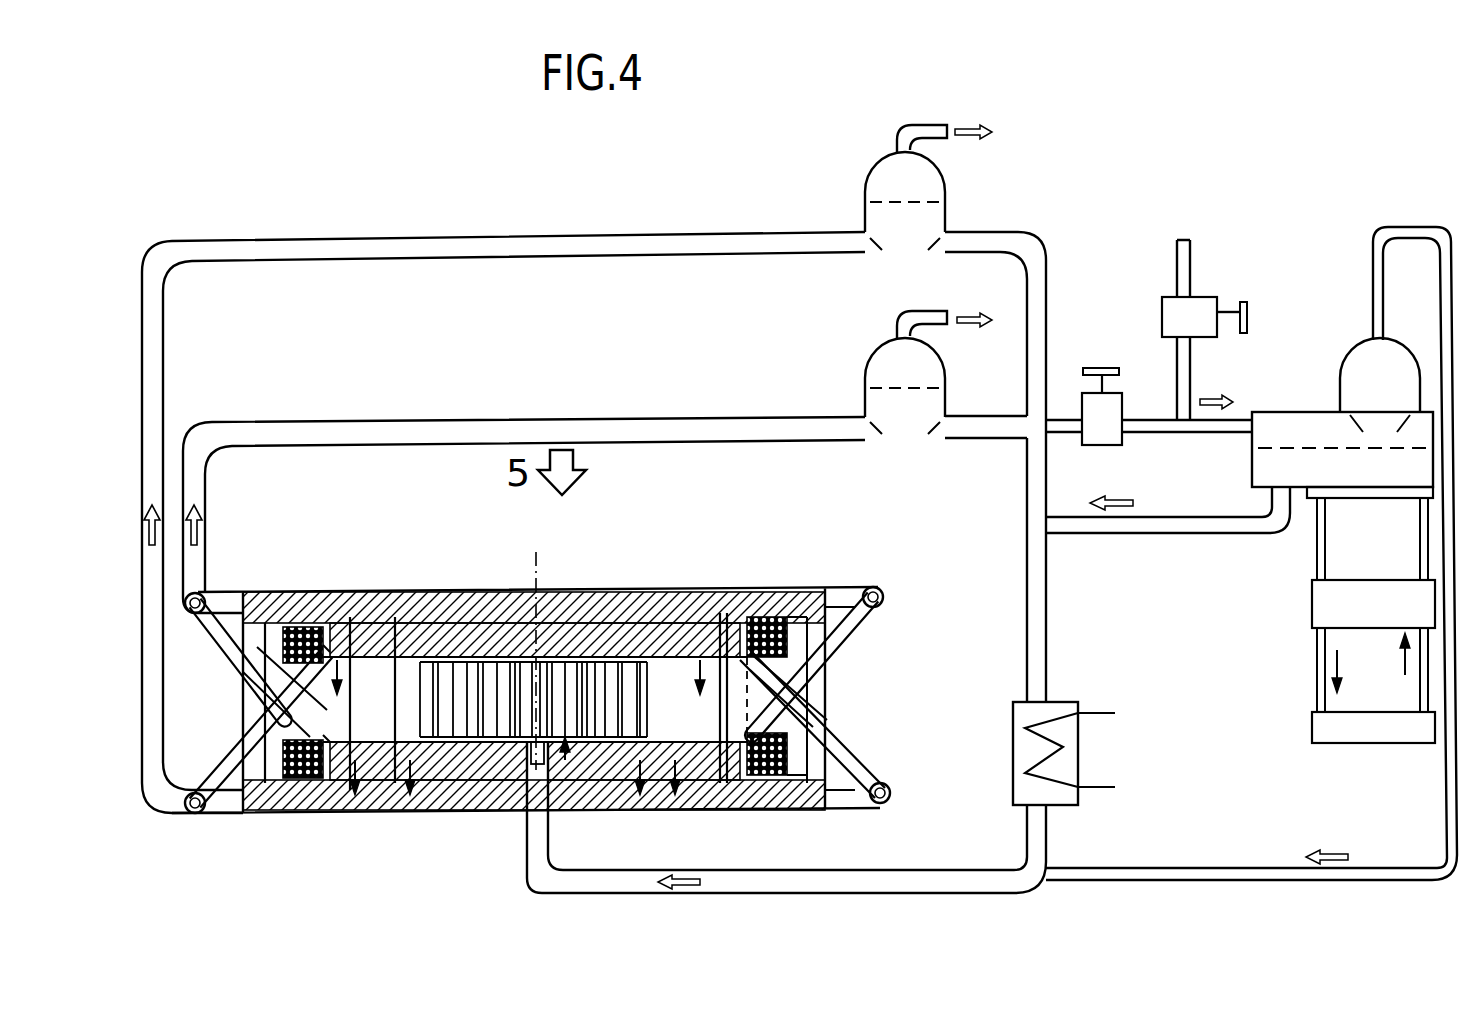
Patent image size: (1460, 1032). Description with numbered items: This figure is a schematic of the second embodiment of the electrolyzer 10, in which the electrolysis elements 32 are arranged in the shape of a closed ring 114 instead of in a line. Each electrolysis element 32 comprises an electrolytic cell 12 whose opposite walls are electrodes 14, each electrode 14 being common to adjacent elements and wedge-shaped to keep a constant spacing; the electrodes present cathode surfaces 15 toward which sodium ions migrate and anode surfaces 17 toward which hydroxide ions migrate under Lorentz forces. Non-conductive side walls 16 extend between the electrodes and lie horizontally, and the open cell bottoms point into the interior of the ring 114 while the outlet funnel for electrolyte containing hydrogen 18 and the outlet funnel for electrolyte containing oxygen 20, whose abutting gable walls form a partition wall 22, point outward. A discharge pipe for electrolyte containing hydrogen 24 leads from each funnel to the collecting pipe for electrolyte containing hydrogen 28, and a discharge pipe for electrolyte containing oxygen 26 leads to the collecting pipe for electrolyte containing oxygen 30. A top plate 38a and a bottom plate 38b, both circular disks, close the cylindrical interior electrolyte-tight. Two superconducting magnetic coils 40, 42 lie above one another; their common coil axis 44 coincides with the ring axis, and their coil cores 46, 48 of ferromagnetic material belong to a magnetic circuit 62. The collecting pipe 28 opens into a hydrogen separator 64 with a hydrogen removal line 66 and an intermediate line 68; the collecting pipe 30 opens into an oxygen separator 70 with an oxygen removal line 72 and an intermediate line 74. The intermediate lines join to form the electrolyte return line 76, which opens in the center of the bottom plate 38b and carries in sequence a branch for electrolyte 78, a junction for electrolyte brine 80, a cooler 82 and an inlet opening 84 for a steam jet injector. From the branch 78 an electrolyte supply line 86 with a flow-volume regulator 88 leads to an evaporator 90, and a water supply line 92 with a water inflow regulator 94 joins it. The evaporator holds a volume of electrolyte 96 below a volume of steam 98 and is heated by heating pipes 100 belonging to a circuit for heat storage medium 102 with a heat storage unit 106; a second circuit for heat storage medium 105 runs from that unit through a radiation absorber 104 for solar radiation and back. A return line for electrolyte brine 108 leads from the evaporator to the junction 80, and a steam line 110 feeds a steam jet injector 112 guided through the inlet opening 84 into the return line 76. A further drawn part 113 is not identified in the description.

The electrolyzer 10 is at (248, 820).
The electrolytic cell 12 is at (337, 657).
The electrode 14 is at (358, 702).
The cathode surface 15 is at (372, 768).
The side wall 16 is at (396, 660).
The anode surface 17 is at (714, 790).
The outlet funnel for electrolyte containing hydrogen 18 is at (330, 790).
The outlet funnel for electrolyte containing oxygen 20 is at (830, 718).
The partition wall 22 is at (745, 590).
The discharge pipe for electrolyte containing hydrogen 24 is at (226, 760).
The discharge pipe for electrolyte containing oxygen 26 is at (222, 650).
The collecting pipe for electrolyte containing hydrogen 28 is at (335, 242).
The collecting pipe for electrolyte containing oxygen 30 is at (463, 422).
The electrolysis element 32 is at (642, 790).
The top plate 38a is at (600, 650).
The bottom plate 38b is at (485, 790).
The superconducting magnetic coil 40 is at (297, 780).
The superconducting magnetic coil 42 is at (297, 627).
The coil axis 44 is at (538, 566).
The coil core 46 is at (462, 782).
The coil core 48 is at (440, 640).
The magnetic circuit 62 is at (640, 587).
The hydrogen separator 64 is at (858, 185).
The hydrogen removal line 66 is at (930, 125).
The intermediate line 68 is at (1010, 234).
The oxygen separator 70 is at (862, 364).
The oxygen removal line 72 is at (938, 312).
The intermediate line 74 is at (988, 418).
The electrolyte return line 76 is at (540, 878).
The branch for electrolyte 78 is at (1060, 418).
The junction for electrolyte brine 80 is at (1057, 540).
The cooler 82 is at (1085, 698).
The inlet opening for steam jet injector 84 is at (1015, 882).
The electrolyte supply line 86 is at (1065, 432).
The flow-volume regulator 88 is at (1124, 392).
The evaporator 90 is at (1272, 410).
The water supply line 92 is at (1190, 254).
The water inflow regulator 94 is at (1222, 292).
The volume of electrolyte 96 is at (1302, 483).
The volume of steam 98 is at (1357, 350).
The heating pipes 100 is at (1382, 500).
The circuit for heat storage medium 102 is at (1308, 538).
The radiation absorber 104 is at (1320, 746).
The second circuit for heat storage medium 105 is at (1316, 654).
The heat storage unit 106 is at (1312, 612).
The return line for electrolyte brine 108 is at (1195, 534).
The steam line 110 is at (1452, 812).
The steam jet injector 112 is at (995, 860).
The chamfer 113 is at (365, 655).
The ring 114 is at (408, 797).